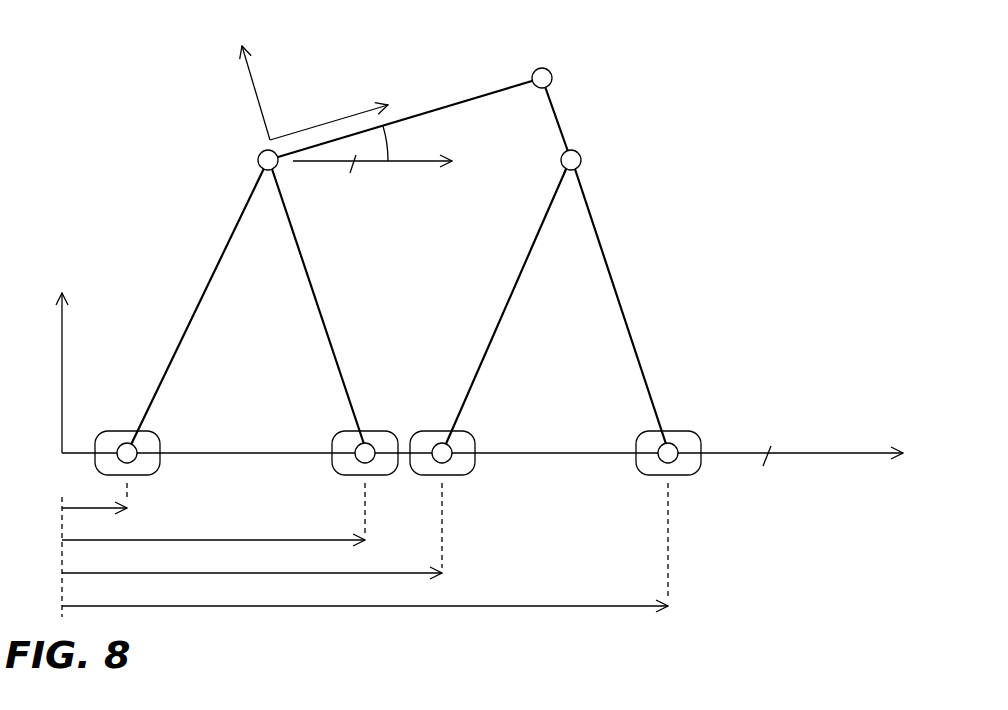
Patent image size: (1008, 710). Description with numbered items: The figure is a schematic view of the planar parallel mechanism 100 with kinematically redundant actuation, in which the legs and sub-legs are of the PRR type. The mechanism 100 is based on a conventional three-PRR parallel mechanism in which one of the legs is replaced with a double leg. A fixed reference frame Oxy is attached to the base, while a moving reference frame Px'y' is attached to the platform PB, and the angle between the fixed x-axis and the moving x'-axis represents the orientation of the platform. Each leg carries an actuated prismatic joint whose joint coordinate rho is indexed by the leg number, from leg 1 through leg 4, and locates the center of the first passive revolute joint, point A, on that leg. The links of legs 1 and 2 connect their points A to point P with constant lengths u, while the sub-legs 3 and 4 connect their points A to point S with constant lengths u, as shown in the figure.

The mechanism 100 is at (835, 215).
The first leg (actuated base joint A1 and link u1) 1 is at (165, 335).
The second leg (actuated base joint A2 and link u2) 2 is at (230, 350).
The third leg (actuated base joint A3 and link u3) 3 is at (316, 366).
The fourth leg (actuated base joint A4 and link u4) 4 is at (381, 383).